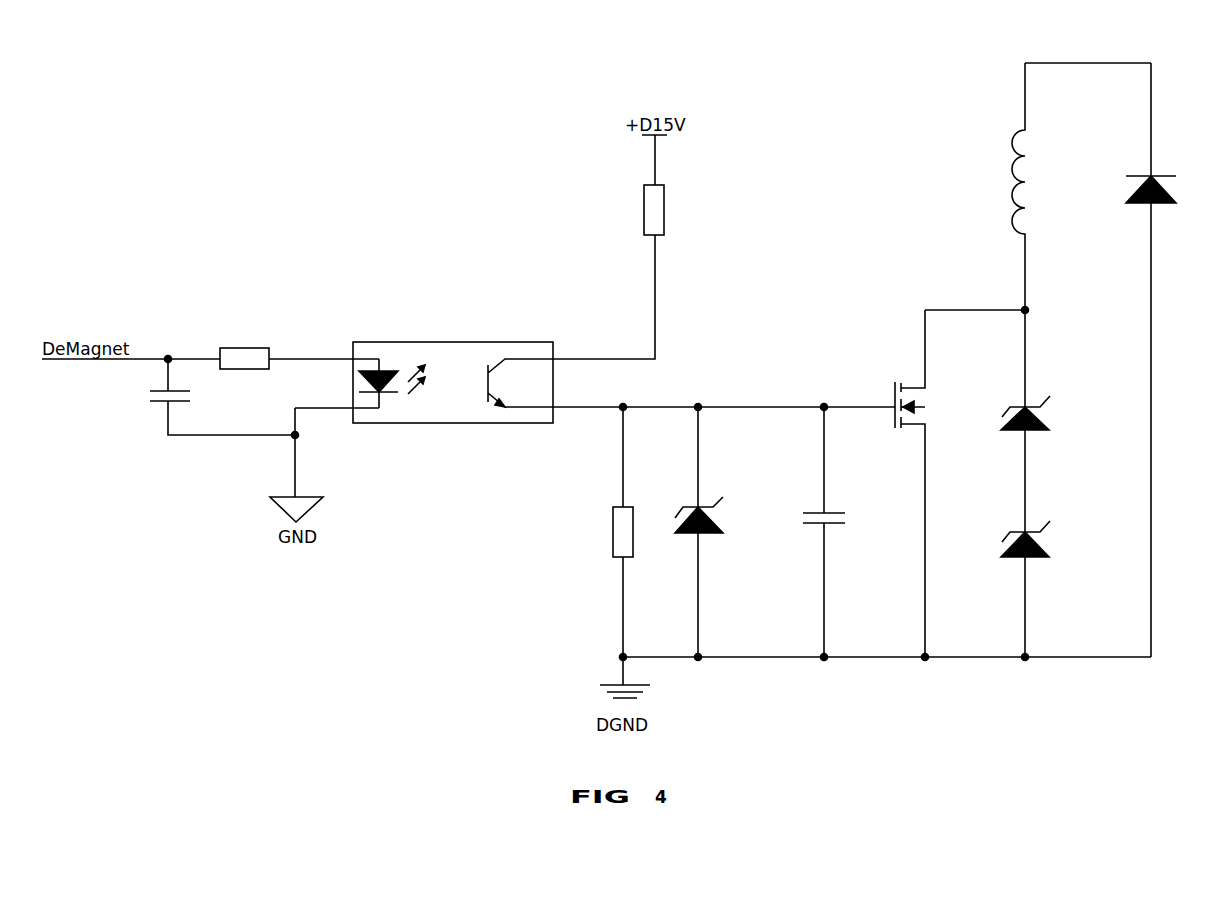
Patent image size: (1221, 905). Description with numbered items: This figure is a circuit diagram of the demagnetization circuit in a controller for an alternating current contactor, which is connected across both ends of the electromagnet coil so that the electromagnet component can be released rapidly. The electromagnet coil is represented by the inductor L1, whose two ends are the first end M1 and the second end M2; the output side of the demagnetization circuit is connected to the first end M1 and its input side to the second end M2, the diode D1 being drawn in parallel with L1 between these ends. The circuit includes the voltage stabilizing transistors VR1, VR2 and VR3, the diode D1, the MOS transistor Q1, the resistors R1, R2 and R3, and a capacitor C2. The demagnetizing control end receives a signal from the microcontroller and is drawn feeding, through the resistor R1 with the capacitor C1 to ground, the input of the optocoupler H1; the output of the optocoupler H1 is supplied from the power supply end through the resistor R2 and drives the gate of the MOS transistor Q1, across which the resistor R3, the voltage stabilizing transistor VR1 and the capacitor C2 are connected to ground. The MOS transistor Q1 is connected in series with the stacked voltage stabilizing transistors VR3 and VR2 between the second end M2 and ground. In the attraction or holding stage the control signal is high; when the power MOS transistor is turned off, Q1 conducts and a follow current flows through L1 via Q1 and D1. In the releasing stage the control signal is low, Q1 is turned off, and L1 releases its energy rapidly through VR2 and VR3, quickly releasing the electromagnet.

The resistor R1 is at (244, 348).
The capacitor C1 is at (201, 397).
The optocoupler H1 is at (449, 371).
The resistor R2 is at (634, 210).
The resistor R3 is at (607, 532).
The voltage stabilizing transistor VR1 is at (721, 532).
The capacitor C2 is at (841, 532).
The MOS transistor Q1 is at (928, 483).
The first end of the electromagnet coil M1 is at (1088, 52).
The second end of the electromagnet coil M2 is at (995, 299).
The electromagnet coil L1 is at (1004, 186).
The diode D1 is at (1166, 360).
The voltage stabilizing transistor VR3 is at (1045, 421).
The voltage stabilizing transistor VR2 is at (1045, 589).